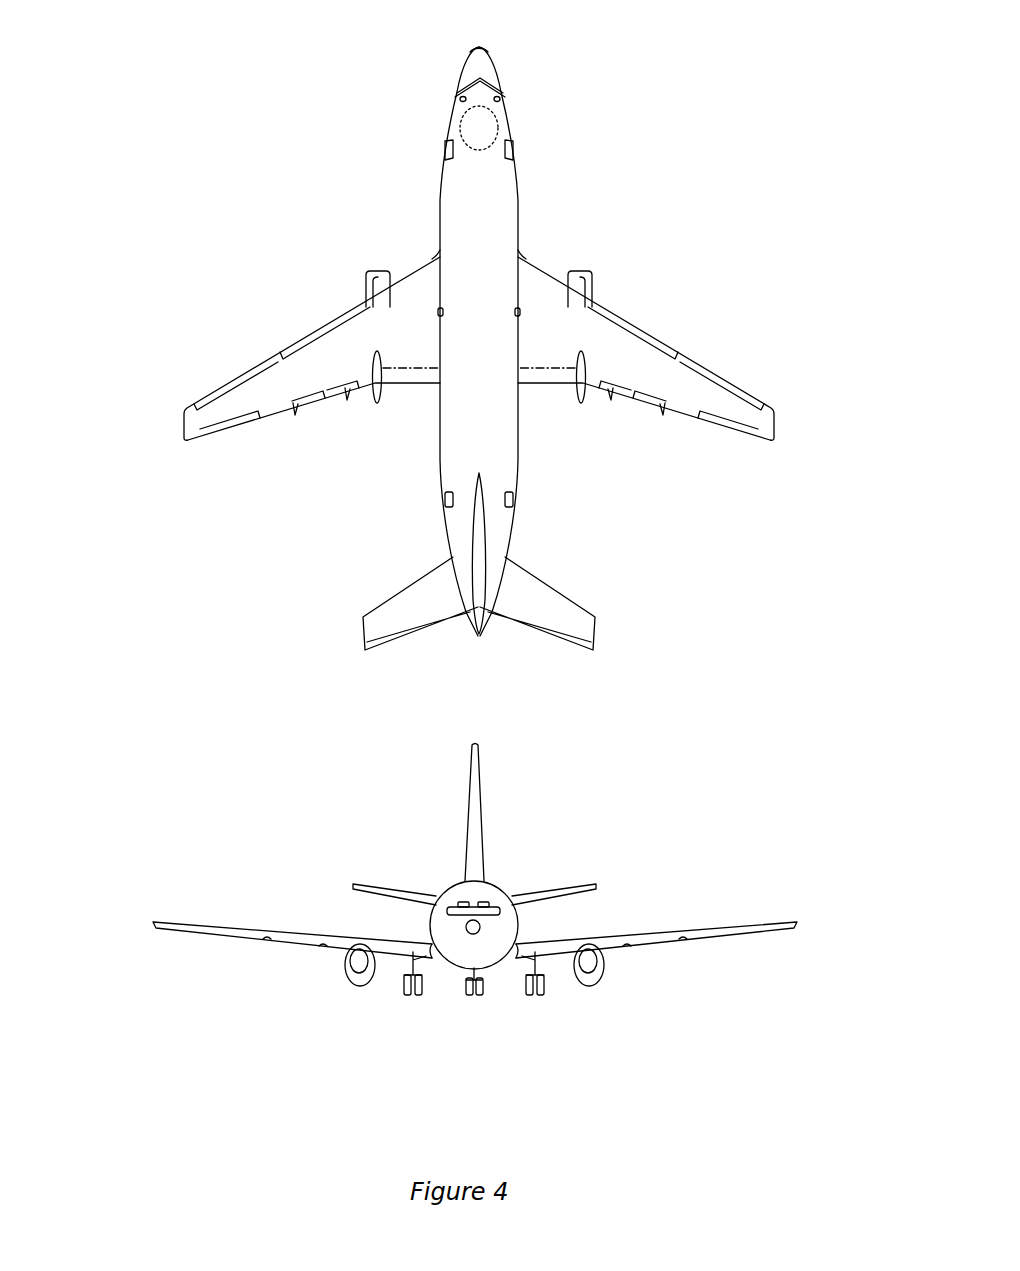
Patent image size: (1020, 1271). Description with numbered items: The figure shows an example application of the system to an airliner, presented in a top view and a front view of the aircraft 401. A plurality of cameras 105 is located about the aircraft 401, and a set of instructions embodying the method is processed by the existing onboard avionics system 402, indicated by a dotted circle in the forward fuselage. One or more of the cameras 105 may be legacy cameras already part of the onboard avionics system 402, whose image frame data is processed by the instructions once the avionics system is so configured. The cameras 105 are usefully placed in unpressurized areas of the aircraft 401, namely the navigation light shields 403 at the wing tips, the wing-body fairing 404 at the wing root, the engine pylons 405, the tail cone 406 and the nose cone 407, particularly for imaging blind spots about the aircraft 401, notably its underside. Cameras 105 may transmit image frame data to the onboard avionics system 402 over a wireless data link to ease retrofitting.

The cameras 105 is at (479, 529).
The aircraft 401 is at (442, 131).
The onboard avionics system 402 is at (482, 128).
The navigation light shields 403 is at (190, 410).
The wing-body fairing 404 is at (437, 257).
The engine pylons 405 is at (368, 285).
The tail cone 406 is at (472, 627).
The nose cone 407 is at (483, 50).